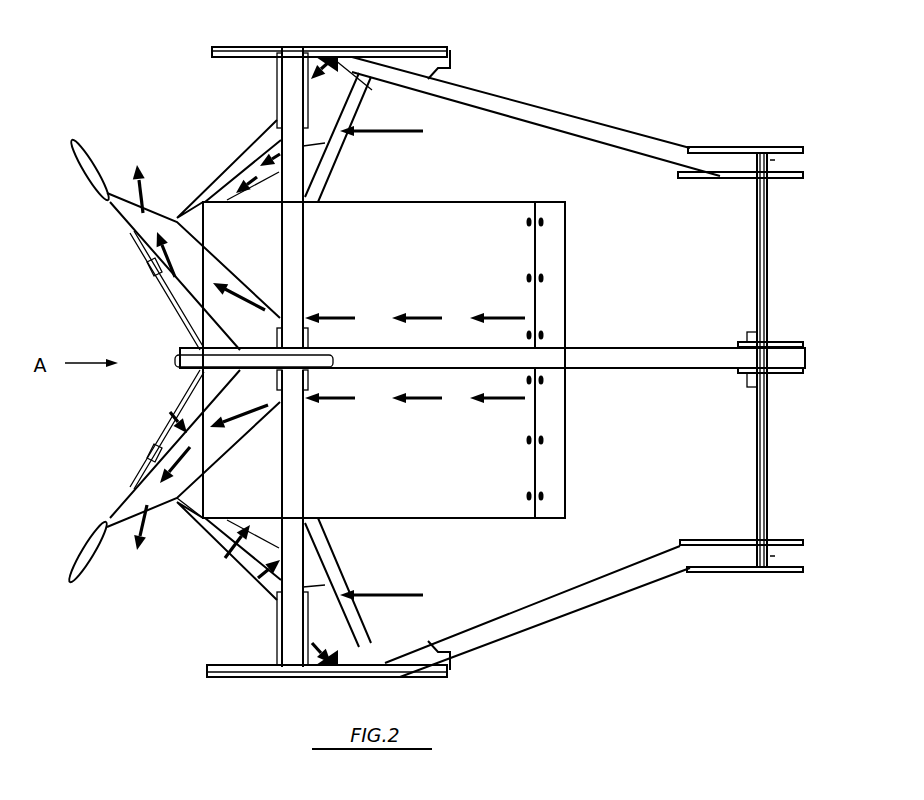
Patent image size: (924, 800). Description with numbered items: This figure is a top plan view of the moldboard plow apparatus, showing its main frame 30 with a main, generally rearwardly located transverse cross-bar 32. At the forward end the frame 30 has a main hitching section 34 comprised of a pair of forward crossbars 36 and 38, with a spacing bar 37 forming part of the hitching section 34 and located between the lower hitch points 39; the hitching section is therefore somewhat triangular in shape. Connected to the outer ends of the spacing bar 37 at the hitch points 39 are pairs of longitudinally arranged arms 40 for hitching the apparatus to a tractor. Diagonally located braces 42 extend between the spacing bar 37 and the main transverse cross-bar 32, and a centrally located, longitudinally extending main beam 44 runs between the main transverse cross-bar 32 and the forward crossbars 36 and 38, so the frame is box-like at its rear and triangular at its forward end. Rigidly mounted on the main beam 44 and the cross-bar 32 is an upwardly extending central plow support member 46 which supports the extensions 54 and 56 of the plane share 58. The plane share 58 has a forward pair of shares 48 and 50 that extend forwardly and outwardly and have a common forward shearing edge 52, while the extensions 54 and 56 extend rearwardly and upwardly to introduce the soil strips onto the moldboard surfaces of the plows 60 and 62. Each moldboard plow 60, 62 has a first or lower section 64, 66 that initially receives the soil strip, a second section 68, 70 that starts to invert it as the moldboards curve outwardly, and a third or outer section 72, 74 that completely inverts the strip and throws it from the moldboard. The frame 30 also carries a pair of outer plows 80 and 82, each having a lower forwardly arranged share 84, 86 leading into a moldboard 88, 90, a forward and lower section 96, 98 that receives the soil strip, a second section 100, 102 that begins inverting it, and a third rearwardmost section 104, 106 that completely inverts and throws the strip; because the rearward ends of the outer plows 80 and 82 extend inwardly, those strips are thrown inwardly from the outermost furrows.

The main frame 30 is at (282, 240).
The main transverse cross-bar 32 is at (292, 198).
The main hitching section 34 is at (816, 242).
The forward crossbar 36 is at (757, 248).
The spacing bar 37 is at (767, 290).
The forward crossbar 38 is at (757, 452).
The lower hitch point 39 is at (792, 160).
The longitudinally arranged arm 40 is at (770, 148).
The diagonal brace 42 is at (565, 122).
The main beam 44 is at (652, 352).
The central plow support member 46 is at (175, 358).
The forward share 48 is at (560, 308).
The forward share 50 is at (562, 452).
The forward shearing edge 52 is at (567, 385).
The plane share extension 54 is at (462, 222).
The plane share extension 56 is at (457, 505).
The plane share 58 is at (415, 200).
The moldboard plow 60 is at (110, 205).
The moldboard plow 62 is at (168, 428).
The first section 64 is at (178, 312).
The first section 66 is at (250, 400).
The second section 68 is at (130, 192).
The second section 70 is at (135, 497).
The third section 72 is at (80, 155).
The third section 74 is at (80, 558).
The outer plow 80 is at (228, 153).
The outer plow 82 is at (270, 596).
The share 84 is at (445, 62).
The share 86 is at (448, 660).
The moldboard 88 is at (345, 55).
The moldboard 90 is at (300, 585).
The forward lower section 96 is at (372, 62).
The forward lower section 98 is at (330, 666).
The second section 100 is at (270, 130).
The second section 102 is at (250, 560).
The third rearwardmost section 104 is at (148, 265).
The third rearwardmost section 106 is at (148, 450).